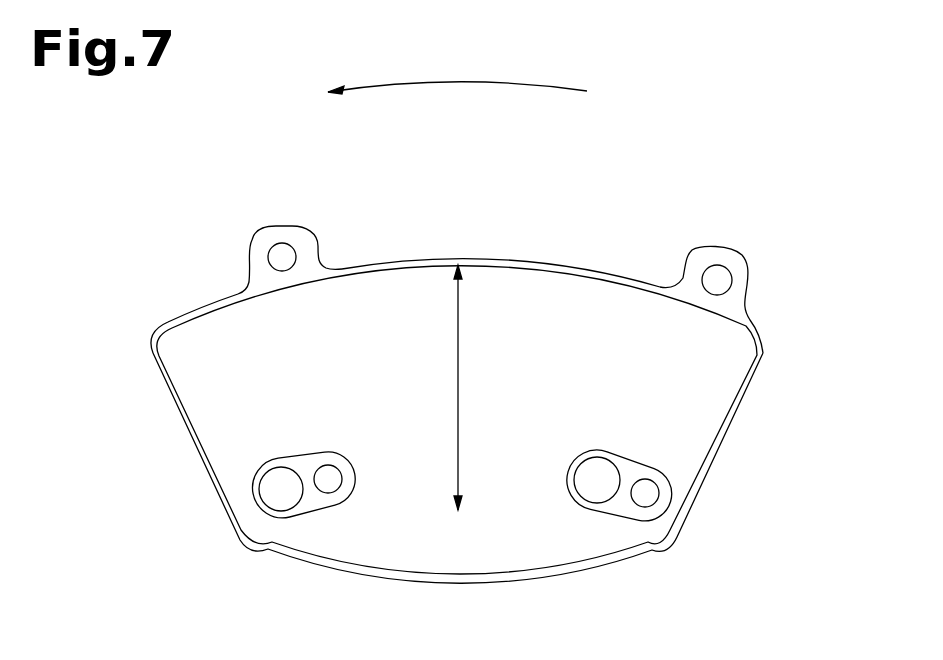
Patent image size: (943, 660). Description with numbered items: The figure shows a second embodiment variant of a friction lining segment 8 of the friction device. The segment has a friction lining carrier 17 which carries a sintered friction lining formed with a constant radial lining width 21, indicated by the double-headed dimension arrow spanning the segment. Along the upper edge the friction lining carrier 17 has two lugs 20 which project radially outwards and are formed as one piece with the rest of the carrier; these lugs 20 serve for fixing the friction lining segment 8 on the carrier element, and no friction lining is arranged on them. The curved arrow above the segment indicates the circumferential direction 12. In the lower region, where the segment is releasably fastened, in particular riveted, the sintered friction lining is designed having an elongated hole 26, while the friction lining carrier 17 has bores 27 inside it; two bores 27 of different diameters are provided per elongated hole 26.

The friction lining segment 8 is at (628, 190).
The circumferential direction 12 is at (460, 82).
The friction lining carrier 17 is at (255, 238).
The lug 20 is at (740, 250).
The radial lining width 21 is at (458, 338).
The elongated hole 26 is at (618, 510).
The bore 27 is at (653, 492).